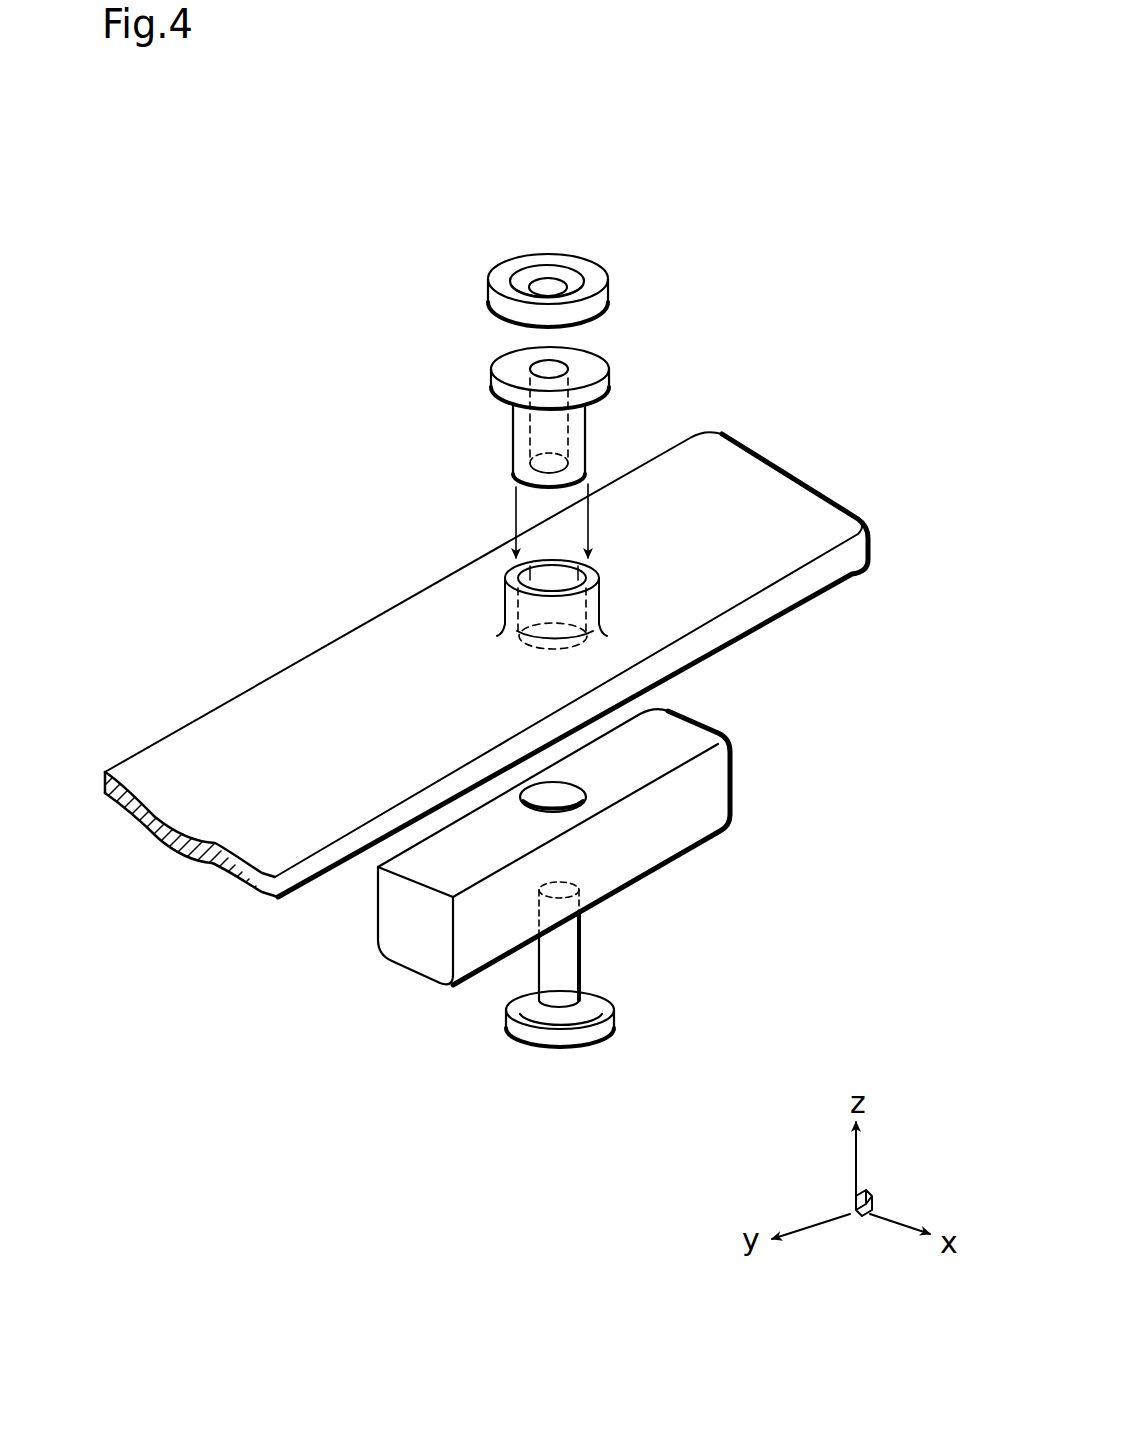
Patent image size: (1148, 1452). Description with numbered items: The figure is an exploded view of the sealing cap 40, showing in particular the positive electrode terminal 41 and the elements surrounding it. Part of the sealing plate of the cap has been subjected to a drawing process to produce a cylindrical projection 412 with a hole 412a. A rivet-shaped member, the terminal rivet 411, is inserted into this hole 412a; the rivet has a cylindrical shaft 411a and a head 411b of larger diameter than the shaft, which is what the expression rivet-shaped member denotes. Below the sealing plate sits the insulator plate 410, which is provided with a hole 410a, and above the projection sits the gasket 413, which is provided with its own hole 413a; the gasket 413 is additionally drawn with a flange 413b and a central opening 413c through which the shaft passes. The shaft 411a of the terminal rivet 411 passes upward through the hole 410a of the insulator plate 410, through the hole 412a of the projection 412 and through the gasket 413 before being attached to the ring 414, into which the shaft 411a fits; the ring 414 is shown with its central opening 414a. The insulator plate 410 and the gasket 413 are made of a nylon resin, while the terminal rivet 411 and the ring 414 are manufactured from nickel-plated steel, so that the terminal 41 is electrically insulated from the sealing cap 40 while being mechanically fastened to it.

The sealing cap 40 is at (322, 698).
The positive electrode terminal 41 is at (652, 373).
The insulator plate 410 is at (583, 828).
The hole 410a is at (548, 797).
The terminal rivet 411 is at (663, 964).
The shaft 411a is at (582, 918).
The head 411b is at (613, 1010).
The cylindrical projection 412 is at (655, 583).
The hole 412a is at (610, 582).
The gasket 413 is at (447, 417).
The hole 413a is at (512, 440).
The flange of sleeve 413b is at (497, 374).
The hole of sleeve 413c is at (540, 362).
The ring 414 is at (495, 246).
The hole of washer 414a is at (523, 282).